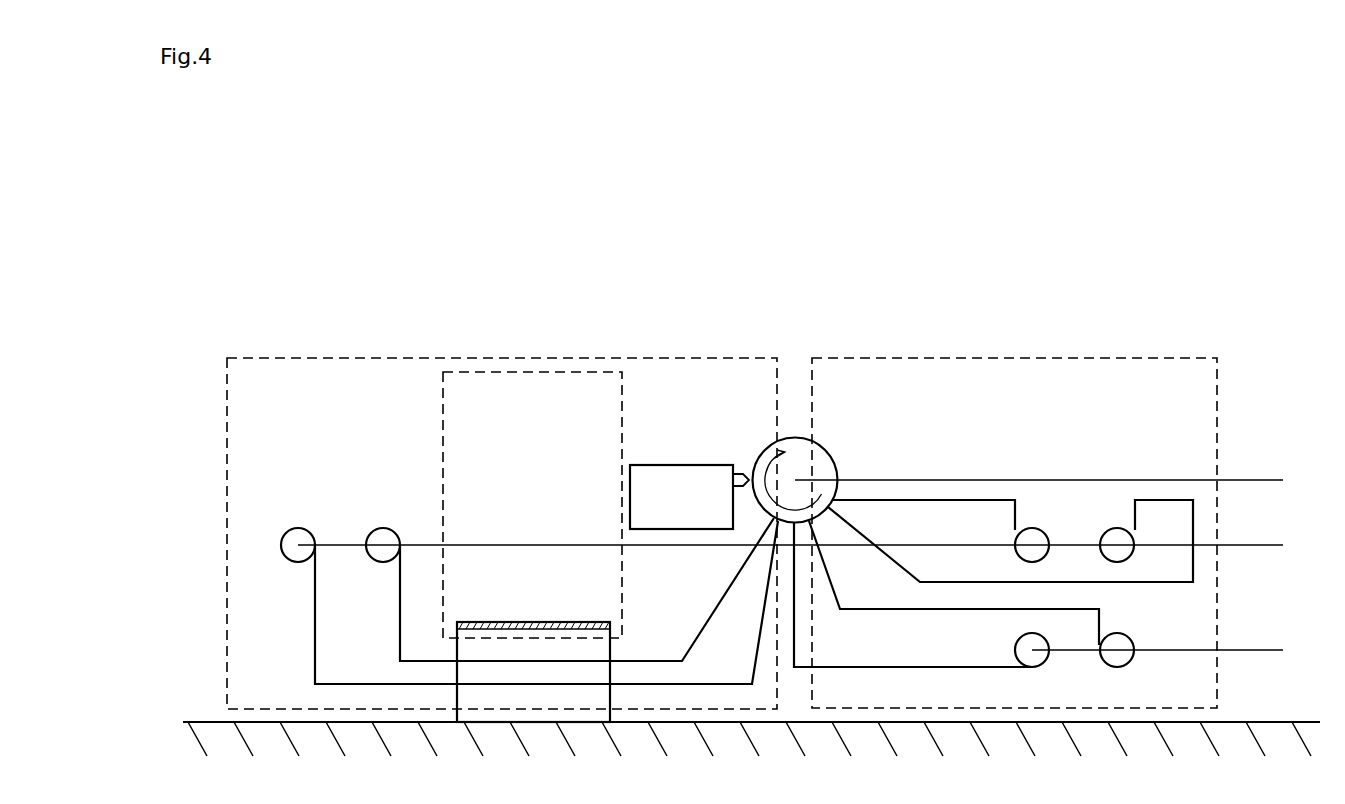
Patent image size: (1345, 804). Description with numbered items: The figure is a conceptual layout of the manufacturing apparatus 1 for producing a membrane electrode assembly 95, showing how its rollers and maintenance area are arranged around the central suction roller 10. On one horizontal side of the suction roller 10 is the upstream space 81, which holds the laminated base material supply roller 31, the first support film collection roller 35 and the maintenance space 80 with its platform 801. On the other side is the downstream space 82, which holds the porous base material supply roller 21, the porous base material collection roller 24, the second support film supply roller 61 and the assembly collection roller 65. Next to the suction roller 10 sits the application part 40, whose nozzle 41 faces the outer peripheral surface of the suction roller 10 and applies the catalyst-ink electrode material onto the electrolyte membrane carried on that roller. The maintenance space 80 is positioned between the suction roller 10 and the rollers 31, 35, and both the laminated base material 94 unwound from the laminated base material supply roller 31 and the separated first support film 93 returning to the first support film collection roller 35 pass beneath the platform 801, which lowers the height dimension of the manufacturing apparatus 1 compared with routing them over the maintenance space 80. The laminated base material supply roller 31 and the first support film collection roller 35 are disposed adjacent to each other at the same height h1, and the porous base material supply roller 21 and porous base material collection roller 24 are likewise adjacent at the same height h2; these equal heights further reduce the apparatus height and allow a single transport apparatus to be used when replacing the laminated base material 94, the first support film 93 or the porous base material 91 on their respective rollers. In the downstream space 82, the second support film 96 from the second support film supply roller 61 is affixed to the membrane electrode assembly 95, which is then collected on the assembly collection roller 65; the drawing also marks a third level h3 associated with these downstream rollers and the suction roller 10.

The manufacturing apparatus 1 is at (707, 303).
The suction roller 10 is at (796, 458).
The porous base material supply roller 21 is at (1022, 643).
The porous base material collection roller 24 is at (1115, 660).
The laminated base material supply roller 31 is at (298, 532).
The first support film collection roller 35 is at (383, 532).
The application part 40 is at (683, 488).
The nozzle 41 is at (745, 476).
The second support film supply roller 61 is at (1032, 540).
The assembly collection roller 65 is at (1117, 540).
The maintenance space 80 is at (540, 372).
The platform 801 is at (535, 621).
The upstream space 81 is at (336, 356).
The downstream space 82 is at (1080, 357).
The porous base material 91 is at (830, 667).
The first support film 93 is at (702, 622).
The laminated base material 94 is at (315, 630).
The membrane electrode assembly 95 is at (1162, 499).
The second support film 96 is at (924, 500).
The height h1 is at (808, 545).
The height h2 is at (1175, 650).
The height h3 is at (1056, 480).